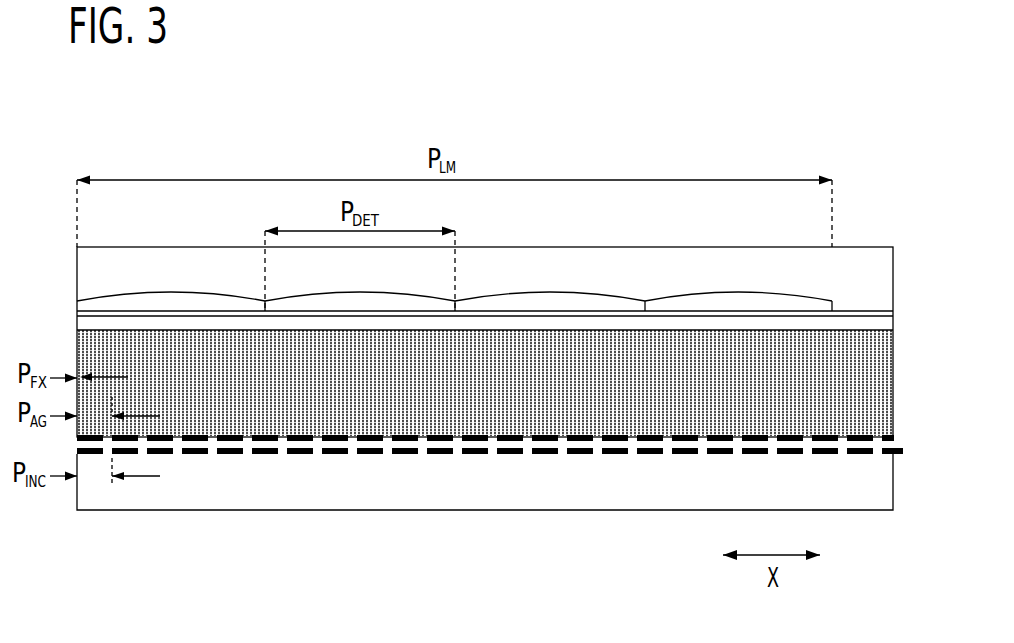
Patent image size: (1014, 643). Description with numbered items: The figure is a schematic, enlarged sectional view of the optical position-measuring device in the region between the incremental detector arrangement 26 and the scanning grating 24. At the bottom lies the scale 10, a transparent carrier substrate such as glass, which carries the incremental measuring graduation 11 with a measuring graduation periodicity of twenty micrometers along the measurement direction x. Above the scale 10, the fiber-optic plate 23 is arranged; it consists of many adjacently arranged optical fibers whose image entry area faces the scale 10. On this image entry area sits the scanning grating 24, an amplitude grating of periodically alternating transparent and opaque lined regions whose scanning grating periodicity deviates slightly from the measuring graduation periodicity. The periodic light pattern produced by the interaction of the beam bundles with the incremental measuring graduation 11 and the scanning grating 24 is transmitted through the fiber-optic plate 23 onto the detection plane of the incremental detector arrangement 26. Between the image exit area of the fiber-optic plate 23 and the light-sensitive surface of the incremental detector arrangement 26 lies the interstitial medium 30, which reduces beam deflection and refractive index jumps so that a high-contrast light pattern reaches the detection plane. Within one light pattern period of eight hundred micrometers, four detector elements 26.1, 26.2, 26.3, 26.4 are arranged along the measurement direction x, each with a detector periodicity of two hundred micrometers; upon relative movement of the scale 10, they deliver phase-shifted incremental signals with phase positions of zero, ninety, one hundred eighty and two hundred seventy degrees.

The scale 10 is at (868, 496).
The incremental measuring graduation 11 is at (897, 456).
The fiber-optic plate 23 is at (882, 358).
The scanning grating 24 is at (896, 440).
The incremental detector arrangement 26 is at (862, 257).
The detector element 26.1 is at (139, 303).
The detector element 26.2 is at (324, 303).
The detector element 26.3 is at (513, 303).
The detector element 26.4 is at (703, 303).
The interstitial medium 30 is at (85, 324).